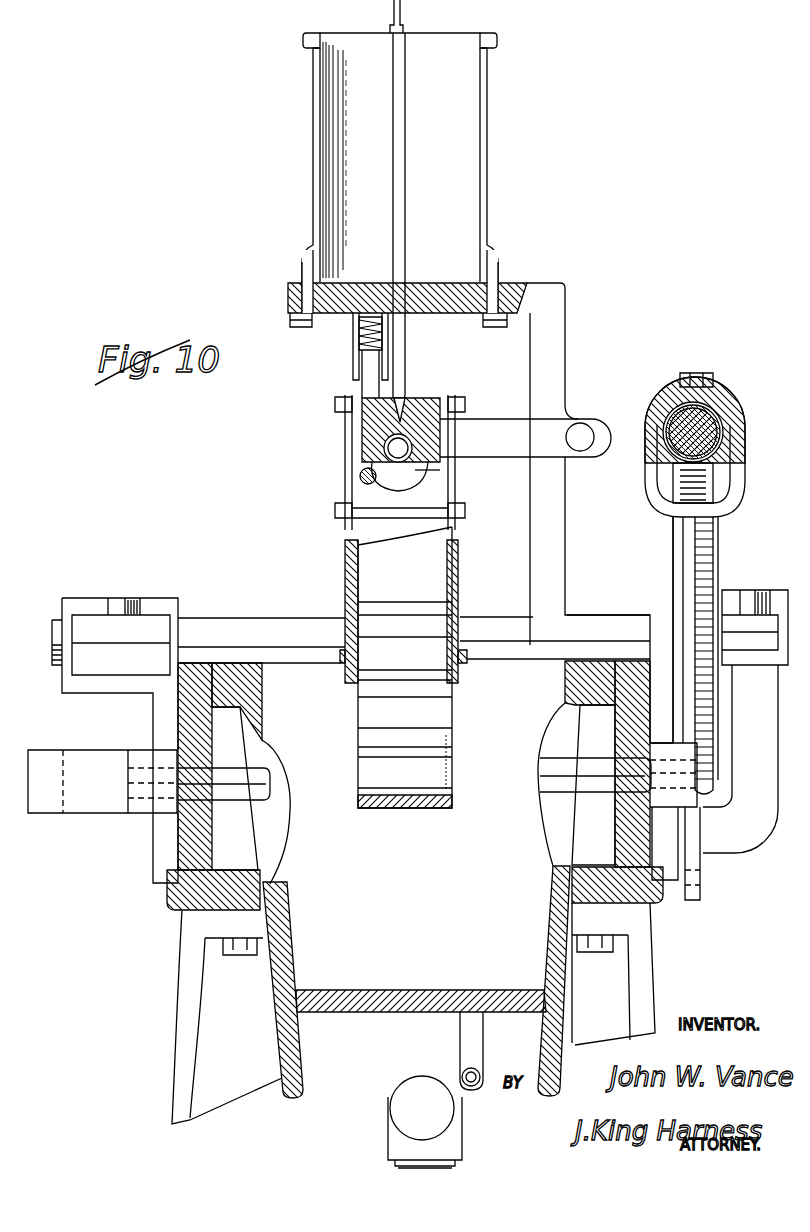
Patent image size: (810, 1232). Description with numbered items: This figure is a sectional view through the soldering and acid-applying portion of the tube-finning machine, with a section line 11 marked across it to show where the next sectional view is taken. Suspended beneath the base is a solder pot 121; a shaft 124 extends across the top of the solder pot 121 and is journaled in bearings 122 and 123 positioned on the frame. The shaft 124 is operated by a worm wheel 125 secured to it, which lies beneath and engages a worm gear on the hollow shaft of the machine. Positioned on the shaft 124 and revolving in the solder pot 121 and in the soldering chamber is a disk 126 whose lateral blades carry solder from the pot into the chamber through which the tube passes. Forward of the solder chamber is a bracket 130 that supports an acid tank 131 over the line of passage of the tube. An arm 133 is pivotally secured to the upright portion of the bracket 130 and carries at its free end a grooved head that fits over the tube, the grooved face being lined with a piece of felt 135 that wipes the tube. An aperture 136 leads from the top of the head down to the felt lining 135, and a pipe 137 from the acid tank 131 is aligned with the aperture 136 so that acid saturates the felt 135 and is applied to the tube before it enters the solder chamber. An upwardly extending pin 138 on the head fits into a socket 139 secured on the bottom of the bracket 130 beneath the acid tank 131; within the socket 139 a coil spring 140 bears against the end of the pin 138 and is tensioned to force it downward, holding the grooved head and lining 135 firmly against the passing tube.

The section line 11— 11 is at (424, 368).
The solder pot 121 is at (415, 914).
The bearing 122 is at (782, 598).
The bearing 123 is at (92, 602).
The shaft 124 is at (260, 623).
The worm wheel 125 is at (718, 550).
The disk 126 is at (455, 718).
The bracket 130 is at (556, 355).
The acid tank 131 is at (470, 132).
The arm 133 is at (494, 432).
The felt lining 135 is at (420, 479).
The aperture 136 is at (420, 386).
The pipe 137 is at (404, 350).
The pin 138 is at (370, 392).
The socket 139 is at (359, 354).
The coil spring 140 is at (359, 334).